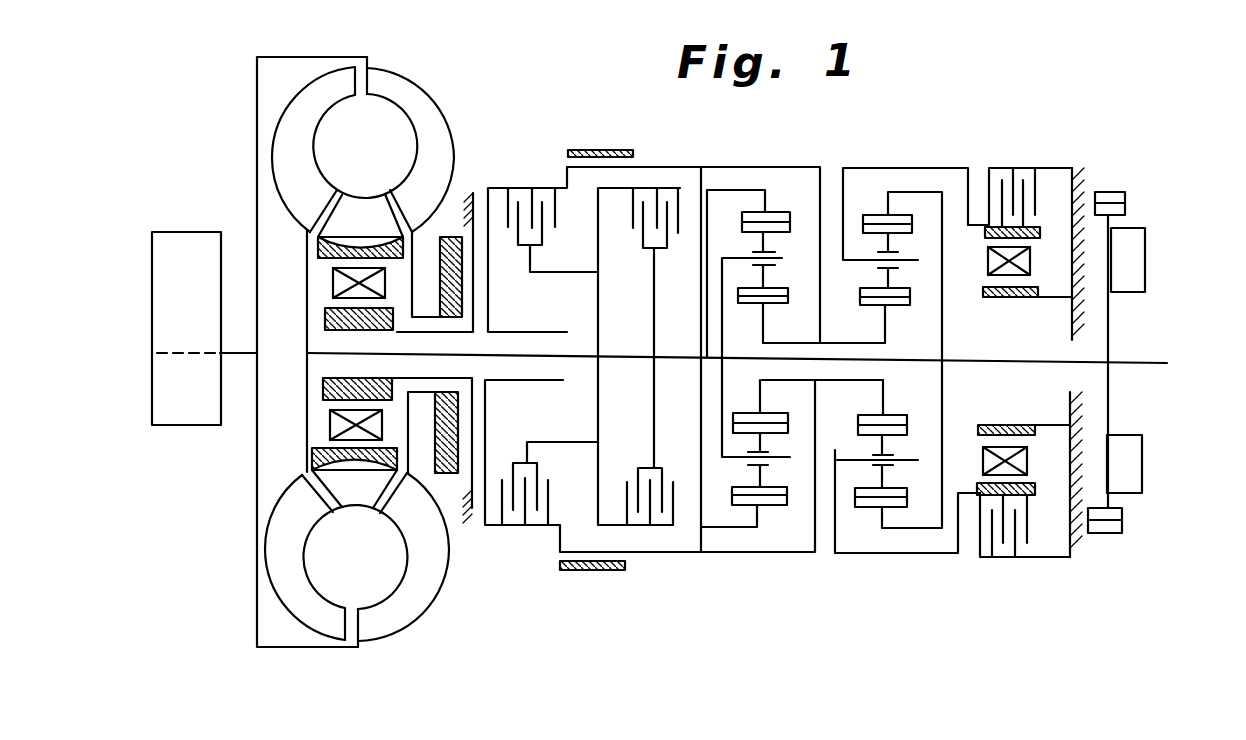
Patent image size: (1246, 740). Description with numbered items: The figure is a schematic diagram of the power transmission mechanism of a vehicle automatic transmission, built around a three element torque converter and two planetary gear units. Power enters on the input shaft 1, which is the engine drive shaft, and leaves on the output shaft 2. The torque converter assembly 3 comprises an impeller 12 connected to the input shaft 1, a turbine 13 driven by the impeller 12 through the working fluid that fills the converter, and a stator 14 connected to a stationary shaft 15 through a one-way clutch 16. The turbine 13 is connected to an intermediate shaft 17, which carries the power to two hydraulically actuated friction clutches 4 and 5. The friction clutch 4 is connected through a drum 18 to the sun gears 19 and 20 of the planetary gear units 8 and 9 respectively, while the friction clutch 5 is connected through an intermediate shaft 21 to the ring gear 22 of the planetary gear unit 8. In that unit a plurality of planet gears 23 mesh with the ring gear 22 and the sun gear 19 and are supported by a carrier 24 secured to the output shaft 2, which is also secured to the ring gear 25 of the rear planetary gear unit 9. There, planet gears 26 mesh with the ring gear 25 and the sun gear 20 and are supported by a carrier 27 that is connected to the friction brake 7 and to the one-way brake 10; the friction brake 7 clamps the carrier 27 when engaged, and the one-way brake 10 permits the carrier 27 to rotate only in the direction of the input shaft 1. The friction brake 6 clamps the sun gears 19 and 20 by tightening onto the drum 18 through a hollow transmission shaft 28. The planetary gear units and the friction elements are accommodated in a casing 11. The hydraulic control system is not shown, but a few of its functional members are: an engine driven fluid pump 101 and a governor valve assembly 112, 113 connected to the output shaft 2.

The input shaft 1 is at (240, 352).
The output shaft 2 is at (1134, 362).
The torque converter assembly 3 is at (390, 65).
The friction clutch 4 is at (522, 185).
The friction clutch 5 is at (665, 184).
The friction brake 6 is at (603, 143).
The friction brake 7 is at (1017, 164).
The planetary gear unit 8 is at (775, 209).
The planetary gear unit 9 is at (872, 209).
The one-way brake 10 is at (988, 258).
The casing 11 is at (474, 193).
The impeller 12 is at (445, 161).
The turbine 13 is at (302, 161).
The stator 14 is at (370, 231).
The stationary shaft 15 is at (422, 332).
The one-way clutch 16 is at (333, 285).
The intermediate shaft 17 is at (322, 356).
The drum 18 is at (660, 166).
The sun gear 19 is at (773, 304).
The sun gear 20 is at (870, 307).
The intermediate shaft 21 is at (673, 356).
The ring gear 22 is at (746, 209).
The planet gears 23 is at (775, 270).
The carrier 24 is at (722, 314).
The ring gear 25 is at (900, 214).
The planet gears 26 is at (863, 287).
The carrier 27 is at (843, 236).
The hollow transmission shaft 28 is at (838, 380).
The engine driven fluid pump 101 is at (446, 474).
The governor valve assembly 112 is at (1142, 461).
The governor valve assembly 113 is at (1146, 229).